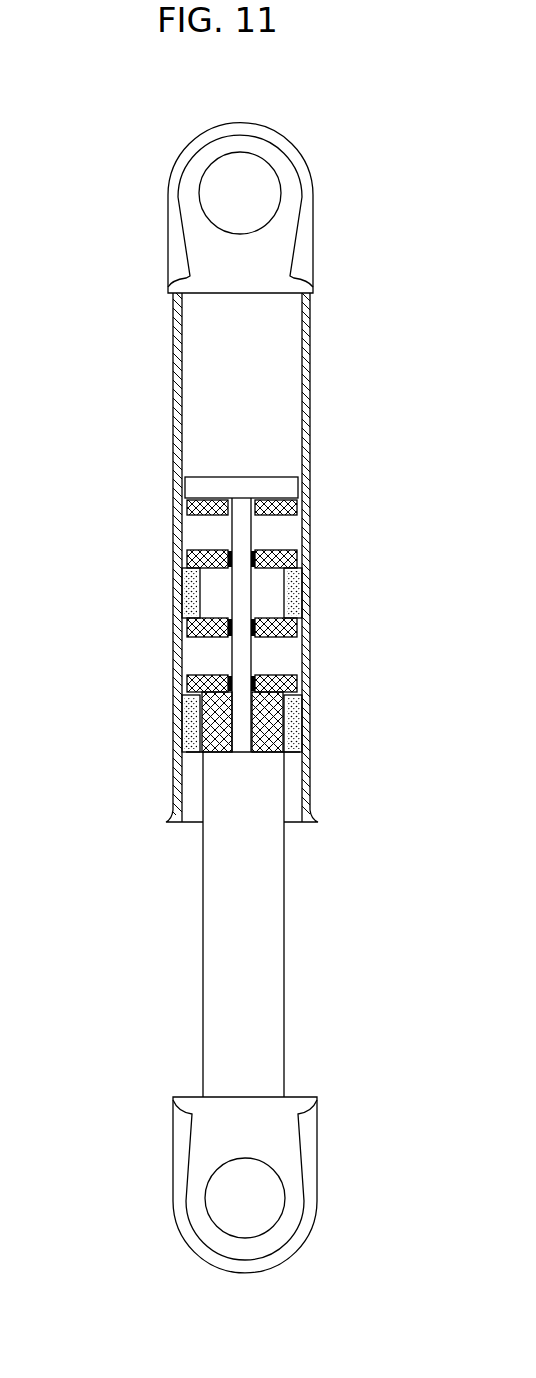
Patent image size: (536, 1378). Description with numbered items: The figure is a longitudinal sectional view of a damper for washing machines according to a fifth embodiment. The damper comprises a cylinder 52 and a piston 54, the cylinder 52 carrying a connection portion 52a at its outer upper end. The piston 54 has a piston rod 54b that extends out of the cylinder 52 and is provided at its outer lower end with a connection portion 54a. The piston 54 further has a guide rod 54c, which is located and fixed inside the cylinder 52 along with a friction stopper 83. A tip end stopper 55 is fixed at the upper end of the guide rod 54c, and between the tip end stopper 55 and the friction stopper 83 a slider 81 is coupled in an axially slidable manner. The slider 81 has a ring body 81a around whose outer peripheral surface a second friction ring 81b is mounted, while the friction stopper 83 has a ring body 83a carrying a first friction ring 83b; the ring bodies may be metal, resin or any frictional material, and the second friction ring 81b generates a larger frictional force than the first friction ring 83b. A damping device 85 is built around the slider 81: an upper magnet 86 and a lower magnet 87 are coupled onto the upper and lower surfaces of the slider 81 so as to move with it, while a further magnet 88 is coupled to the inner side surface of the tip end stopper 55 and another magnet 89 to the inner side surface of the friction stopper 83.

The cylinder 52 is at (193, 472).
The connection portion 52a is at (189, 176).
The tip end stopper 55 is at (287, 484).
The damping device 85 is at (171, 596).
The magnet 88 is at (190, 510).
The upper magnet 86 is at (190, 562).
The lower magnet 87 is at (186, 628).
The magnet 89 is at (202, 650).
The slider 81 is at (309, 595).
The ring body 81a is at (288, 578).
The second friction ring 81b is at (296, 607).
The friction stopper 83 is at (309, 723).
The ring body 83a is at (296, 710).
The first friction ring 83b is at (298, 735).
The piston 54 is at (265, 904).
The guide rod 54c is at (182, 735).
The piston rod 54b is at (285, 955).
The connection portion 54a is at (287, 1234).